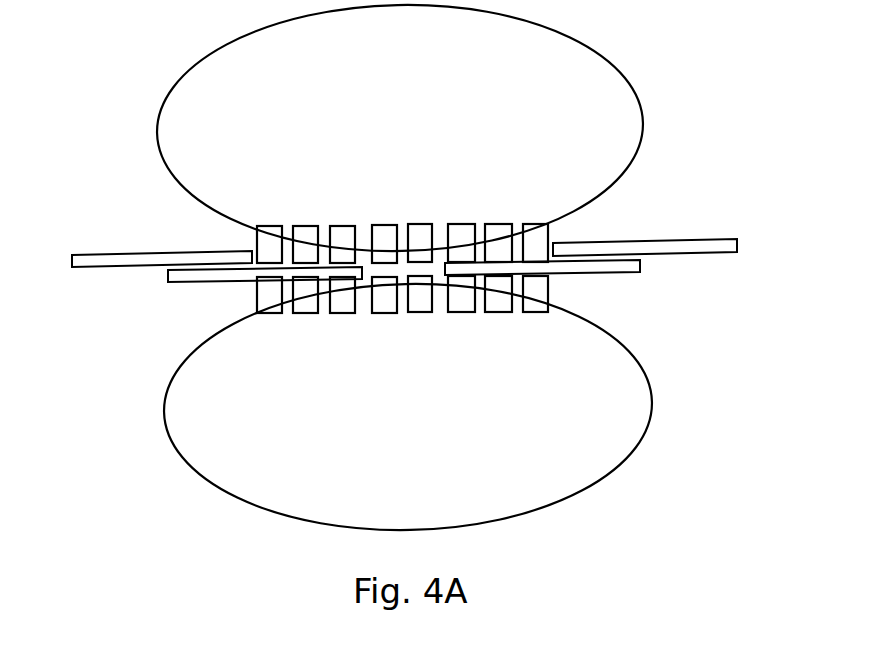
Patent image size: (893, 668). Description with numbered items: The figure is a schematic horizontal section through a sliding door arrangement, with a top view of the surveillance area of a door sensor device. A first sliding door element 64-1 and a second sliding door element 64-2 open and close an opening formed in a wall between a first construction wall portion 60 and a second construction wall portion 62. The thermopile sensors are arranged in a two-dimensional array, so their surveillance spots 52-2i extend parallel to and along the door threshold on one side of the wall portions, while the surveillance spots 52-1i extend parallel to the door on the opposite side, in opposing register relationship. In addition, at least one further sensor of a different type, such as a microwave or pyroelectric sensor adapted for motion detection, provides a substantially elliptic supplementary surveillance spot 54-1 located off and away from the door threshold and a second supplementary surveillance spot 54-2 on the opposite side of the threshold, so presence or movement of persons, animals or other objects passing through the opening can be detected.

The supplementary surveillance spot 54-1 is at (480, 437).
The second supplementary surveillance spot 54-2 is at (466, 107).
The surveillance spots 52-1i is at (388, 312).
The surveillance spots 52-2i is at (385, 232).
The first construction wall portion 60 is at (93, 258).
The second construction wall portion 62 is at (665, 240).
The first sliding door element 64-1 is at (208, 276).
The second sliding door element 64-2 is at (613, 272).